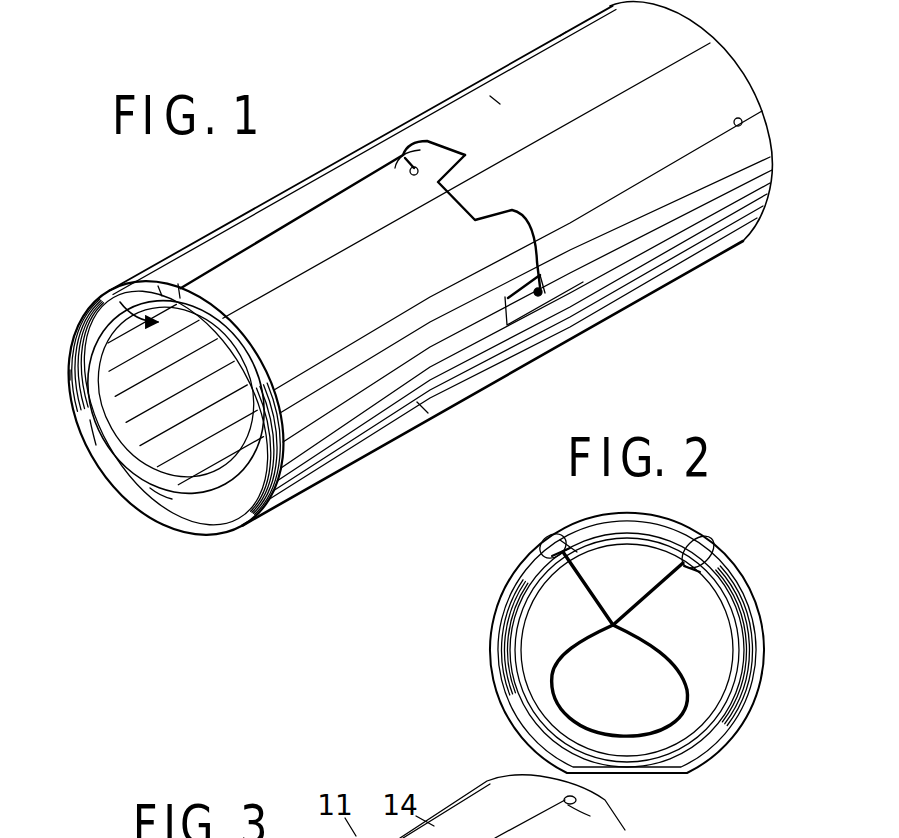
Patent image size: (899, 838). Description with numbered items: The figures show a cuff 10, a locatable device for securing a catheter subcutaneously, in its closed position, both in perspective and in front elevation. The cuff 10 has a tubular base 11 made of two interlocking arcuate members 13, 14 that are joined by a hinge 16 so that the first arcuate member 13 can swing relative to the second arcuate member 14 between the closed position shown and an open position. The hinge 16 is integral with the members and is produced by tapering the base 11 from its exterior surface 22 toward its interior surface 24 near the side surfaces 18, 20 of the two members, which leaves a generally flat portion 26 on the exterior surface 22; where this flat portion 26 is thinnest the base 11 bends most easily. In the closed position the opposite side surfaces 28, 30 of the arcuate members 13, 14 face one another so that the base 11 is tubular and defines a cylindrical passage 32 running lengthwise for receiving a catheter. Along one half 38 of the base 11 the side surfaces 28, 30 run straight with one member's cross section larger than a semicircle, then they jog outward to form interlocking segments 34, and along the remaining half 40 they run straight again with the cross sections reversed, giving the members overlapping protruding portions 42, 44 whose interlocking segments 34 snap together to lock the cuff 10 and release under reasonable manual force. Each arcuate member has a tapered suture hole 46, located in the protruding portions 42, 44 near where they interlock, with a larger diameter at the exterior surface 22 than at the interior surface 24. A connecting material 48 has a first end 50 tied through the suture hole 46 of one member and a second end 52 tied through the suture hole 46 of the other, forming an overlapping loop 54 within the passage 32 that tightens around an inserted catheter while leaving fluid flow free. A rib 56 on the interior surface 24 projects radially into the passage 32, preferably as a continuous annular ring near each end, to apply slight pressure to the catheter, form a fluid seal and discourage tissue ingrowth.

In FIG. 1, the cuff 10 is at (372, 112).
In FIG. 2, the cuff 10 is at (497, 588).
In FIG. 1, the tubular base 11 is at (500, 386).
In FIG. 2, the tubular base 11 is at (762, 610).
In FIG. 1, the first arcuate member 13 is at (335, 458).
In FIG. 2, the first arcuate member 13 is at (735, 573).
In FIG. 1, the second arcuate member 14 is at (566, 31).
In FIG. 1, the hinge 16 is at (118, 458).
In FIG. 2, the hinge 16 is at (645, 777).
In FIG. 1, the side surface 18 is at (132, 484).
In FIG. 2, the side surface 18 is at (682, 776).
In FIG. 1, the side surface 20 is at (88, 432).
In FIG. 2, the side surface 20 is at (600, 775).
In FIG. 1, the exterior surface 22 is at (432, 408).
In FIG. 2, the exterior surface 22 is at (652, 516).
In FIG. 1, the interior surface 24 is at (205, 470).
In FIG. 1, the generally flat portion 26 is at (80, 423).
In FIG. 2, the generally flat portion 26 is at (674, 780).
In FIG. 1, the side surface 28 is at (183, 292).
In FIG. 2, the side surface 28 is at (567, 544).
In FIG. 1, the side surface 30 is at (160, 288).
In FIG. 2, the side surface 30 is at (540, 556).
In FIG. 1, the cylindrical passage 32 is at (104, 300).
In FIG. 2, the cylindrical passage 32 is at (720, 652).
In FIG. 1, the interlocking segments 34 is at (478, 200).
In FIG. 1, the half of the base 38 is at (275, 215).
In FIG. 1, the remaining half of the base 40 is at (495, 100).
In FIG. 1, the protruding portion 42 is at (323, 313).
In FIG. 1, the protruding portion 44 is at (586, 144).
In FIG. 1, the suture hole 46 is at (416, 168).
In FIG. 2, the suture hole 46 is at (556, 530).
In FIG. 2, the connecting material 48 is at (660, 650).
In FIG. 1, the first end 50 is at (577, 280).
In FIG. 2, the first end 50 is at (690, 570).
In FIG. 1, the second end 52 is at (407, 168).
In FIG. 2, the second end 52 is at (582, 556).
In FIG. 2, the loop 54 is at (550, 694).
In FIG. 1, the rib 56 is at (160, 486).
In FIG. 2, the rib 56 is at (516, 634).